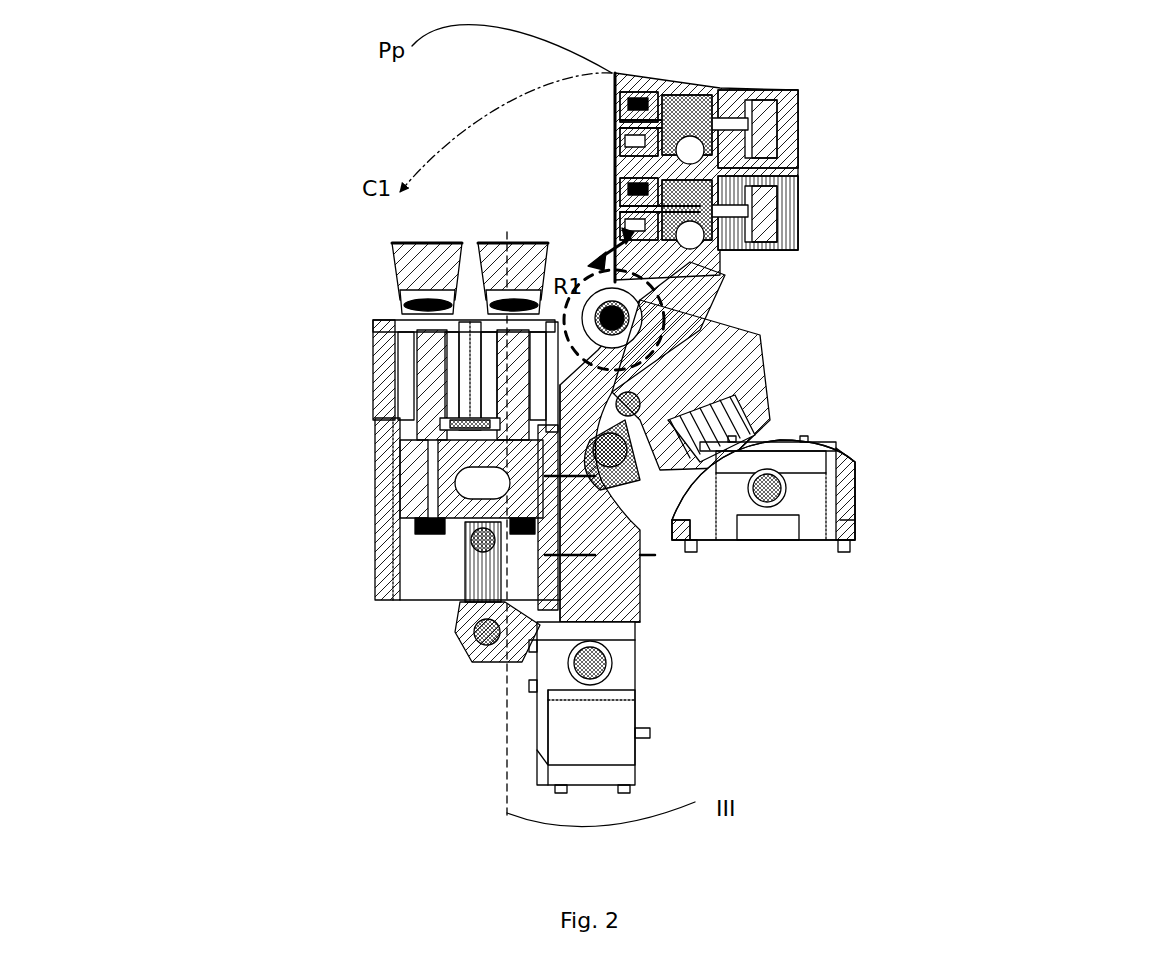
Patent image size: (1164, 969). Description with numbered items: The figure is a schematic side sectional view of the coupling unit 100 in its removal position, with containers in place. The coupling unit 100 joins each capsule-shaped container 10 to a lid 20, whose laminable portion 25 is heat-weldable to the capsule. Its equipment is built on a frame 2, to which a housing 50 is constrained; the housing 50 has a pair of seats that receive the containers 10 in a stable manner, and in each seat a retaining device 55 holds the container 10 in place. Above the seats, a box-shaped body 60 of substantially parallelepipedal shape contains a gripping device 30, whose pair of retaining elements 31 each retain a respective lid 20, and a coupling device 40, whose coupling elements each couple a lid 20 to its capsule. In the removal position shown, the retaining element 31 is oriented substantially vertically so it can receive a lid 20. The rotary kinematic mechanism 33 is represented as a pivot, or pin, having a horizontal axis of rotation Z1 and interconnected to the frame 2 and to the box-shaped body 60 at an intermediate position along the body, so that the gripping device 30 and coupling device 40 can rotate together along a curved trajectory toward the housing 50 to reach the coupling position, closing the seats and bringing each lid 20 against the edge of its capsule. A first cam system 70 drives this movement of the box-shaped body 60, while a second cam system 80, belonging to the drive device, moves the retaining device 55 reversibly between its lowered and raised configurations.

The coupling unit 100 is at (1005, 137).
The frame 2 is at (640, 596).
The container 10 is at (395, 252).
The lid 20 is at (615, 137).
The laminable portion 25 is at (615, 104).
The gripping device 30 is at (617, 157).
The retaining element 31 is at (653, 97).
The rotary kinematic mechanism 33 is at (635, 318).
The coupling device 40 is at (617, 200).
The housing 50 is at (378, 450).
The retaining device 55 is at (398, 302).
The box-shaped body 60 is at (800, 238).
The first cam system 70 is at (736, 452).
The second cam system 80 is at (460, 636).
The horizontal axis of rotation Z1 is at (640, 362).